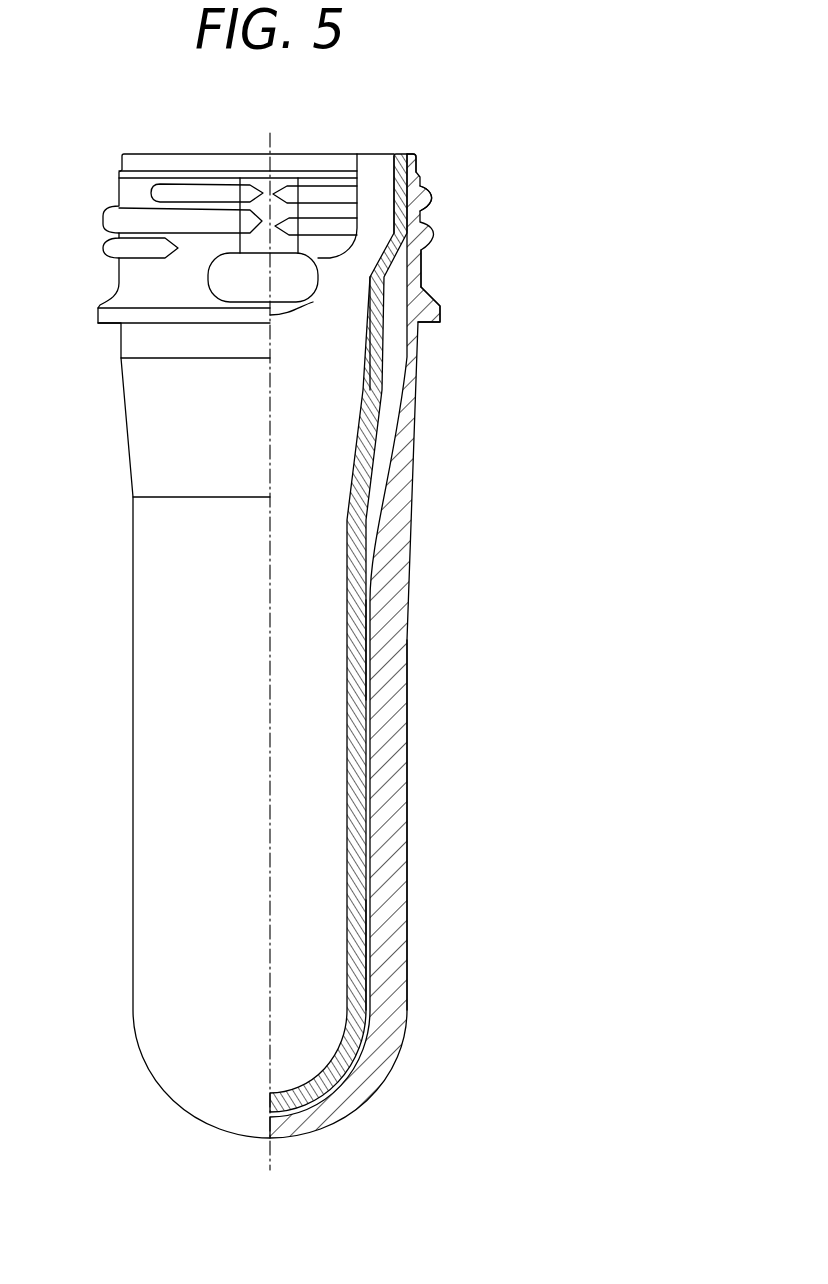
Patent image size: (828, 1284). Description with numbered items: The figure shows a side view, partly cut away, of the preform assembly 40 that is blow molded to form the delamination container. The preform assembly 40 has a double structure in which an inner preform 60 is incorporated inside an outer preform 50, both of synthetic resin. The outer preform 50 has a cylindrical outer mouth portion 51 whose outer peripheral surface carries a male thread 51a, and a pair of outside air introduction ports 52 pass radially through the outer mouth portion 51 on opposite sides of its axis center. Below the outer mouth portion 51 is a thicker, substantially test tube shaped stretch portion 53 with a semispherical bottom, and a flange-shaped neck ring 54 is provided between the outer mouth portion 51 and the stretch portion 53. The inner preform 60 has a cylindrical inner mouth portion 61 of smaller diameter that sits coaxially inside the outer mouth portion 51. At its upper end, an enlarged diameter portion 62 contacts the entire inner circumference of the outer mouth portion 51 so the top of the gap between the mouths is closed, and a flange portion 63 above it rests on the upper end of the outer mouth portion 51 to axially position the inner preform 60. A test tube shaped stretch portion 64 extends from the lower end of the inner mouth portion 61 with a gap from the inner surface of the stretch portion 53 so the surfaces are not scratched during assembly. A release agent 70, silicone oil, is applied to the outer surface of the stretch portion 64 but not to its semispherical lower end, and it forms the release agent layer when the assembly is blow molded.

The preform assembly 40 is at (565, 279).
The outer preform 50 is at (419, 575).
The outer mouth portion 51 is at (430, 266).
The male thread 51a is at (429, 200).
The outside air introduction port 52 is at (232, 275).
The stretch portion 53 is at (417, 819).
The neck ring 54 is at (441, 318).
The inner preform 60 is at (346, 506).
The inner mouth portion 61 is at (362, 305).
The enlarged diameter portion 62 is at (398, 197).
The flange portion 63 is at (408, 155).
The stretch portion 64 is at (377, 957).
The release agent 70 is at (367, 660).